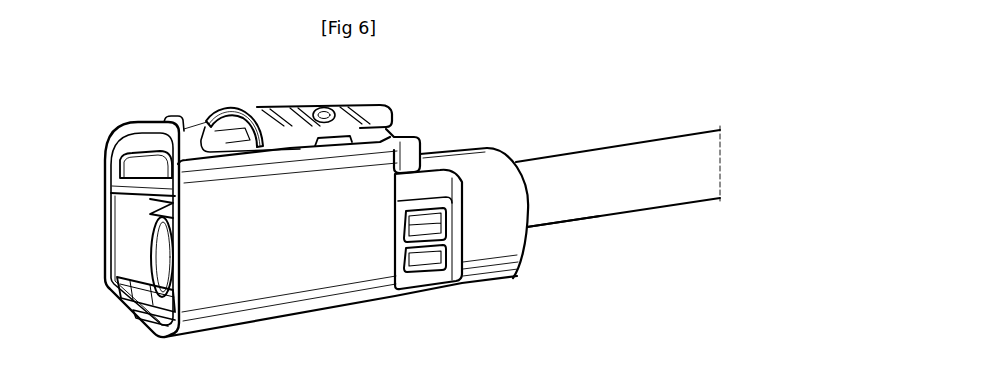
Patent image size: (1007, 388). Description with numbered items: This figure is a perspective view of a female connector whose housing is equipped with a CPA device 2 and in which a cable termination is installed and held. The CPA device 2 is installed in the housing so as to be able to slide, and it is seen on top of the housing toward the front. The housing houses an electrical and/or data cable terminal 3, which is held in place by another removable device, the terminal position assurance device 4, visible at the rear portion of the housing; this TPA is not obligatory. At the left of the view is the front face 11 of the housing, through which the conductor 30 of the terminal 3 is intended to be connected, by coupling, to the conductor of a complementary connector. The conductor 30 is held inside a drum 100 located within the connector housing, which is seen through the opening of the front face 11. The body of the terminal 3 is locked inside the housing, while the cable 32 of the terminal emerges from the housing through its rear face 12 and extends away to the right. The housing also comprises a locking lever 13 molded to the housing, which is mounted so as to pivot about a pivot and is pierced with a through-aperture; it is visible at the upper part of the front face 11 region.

The CPA device 2 is at (445, 118).
The cable terminal 3 is at (568, 242).
The terminal position assurance device 4 is at (417, 280).
The front face 11 is at (103, 225).
The rear face 12 is at (520, 273).
The locking lever 13 is at (145, 163).
The conductor 30 is at (155, 252).
The cable 32 is at (653, 216).
The drum 100 is at (165, 253).